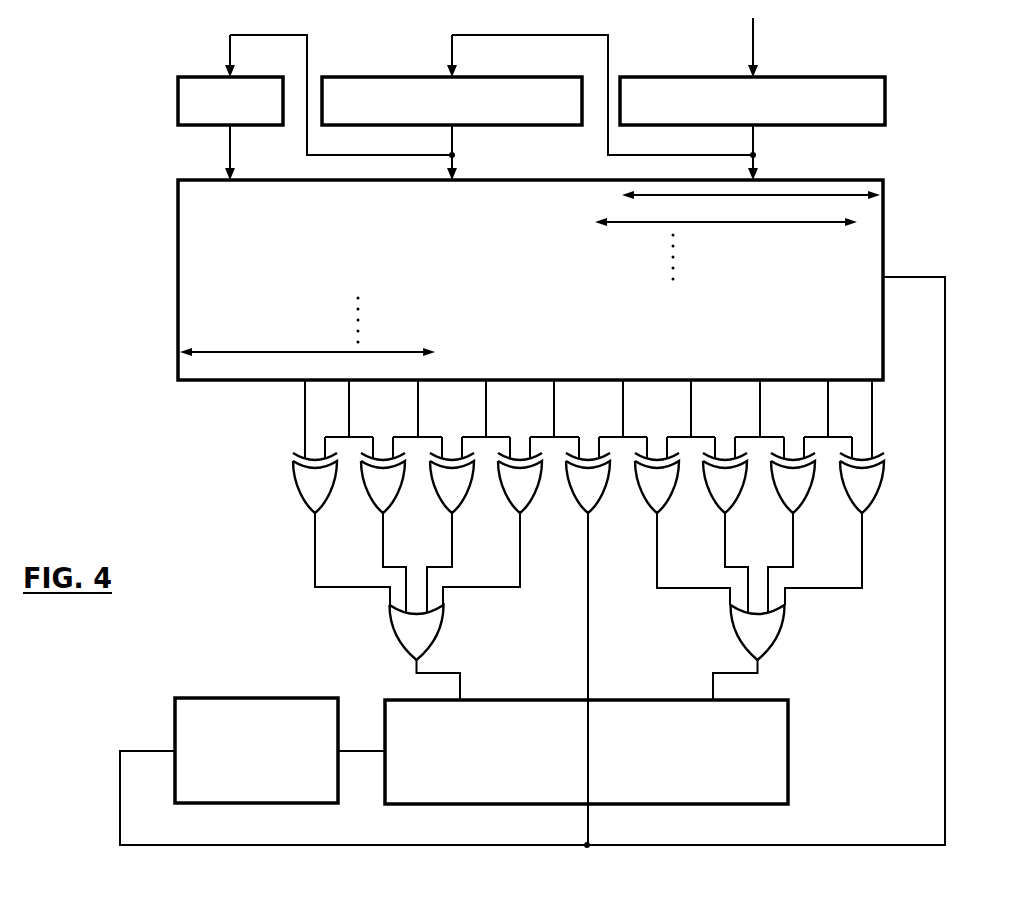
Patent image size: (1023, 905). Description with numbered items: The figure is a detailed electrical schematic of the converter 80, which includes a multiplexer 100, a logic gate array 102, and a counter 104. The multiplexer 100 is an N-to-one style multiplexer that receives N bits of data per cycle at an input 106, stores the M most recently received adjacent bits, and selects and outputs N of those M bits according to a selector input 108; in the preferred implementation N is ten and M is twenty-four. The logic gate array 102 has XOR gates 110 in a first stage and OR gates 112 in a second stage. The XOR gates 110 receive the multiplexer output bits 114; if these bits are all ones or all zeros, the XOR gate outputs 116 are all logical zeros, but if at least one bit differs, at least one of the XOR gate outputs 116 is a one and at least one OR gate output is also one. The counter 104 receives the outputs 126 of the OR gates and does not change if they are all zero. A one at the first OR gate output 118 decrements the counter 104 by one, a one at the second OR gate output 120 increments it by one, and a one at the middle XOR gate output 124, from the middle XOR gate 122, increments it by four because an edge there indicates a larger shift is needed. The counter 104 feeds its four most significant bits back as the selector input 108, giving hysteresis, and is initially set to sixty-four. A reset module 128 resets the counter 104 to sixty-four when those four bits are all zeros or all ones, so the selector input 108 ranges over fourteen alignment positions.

The converter 80 is at (82, 70).
The multiplexer 100 is at (178, 243).
The logic gate array 102 is at (267, 393).
The counter 104 is at (788, 738).
The input 106 is at (755, 47).
The selector input 108 is at (908, 277).
The XOR gates 110 is at (892, 482).
The OR gates 112 is at (796, 627).
The multiplexer output bits 114 is at (890, 417).
The XOR gate outputs 116 is at (894, 553).
The first OR gate output 118 is at (442, 667).
The second OR gate output 120 is at (713, 690).
The middle XOR gate 122 is at (584, 490).
The middle XOR gate output 124 is at (590, 607).
The outputs of the OR gates 126 is at (749, 685).
The reset module 128 is at (175, 725).